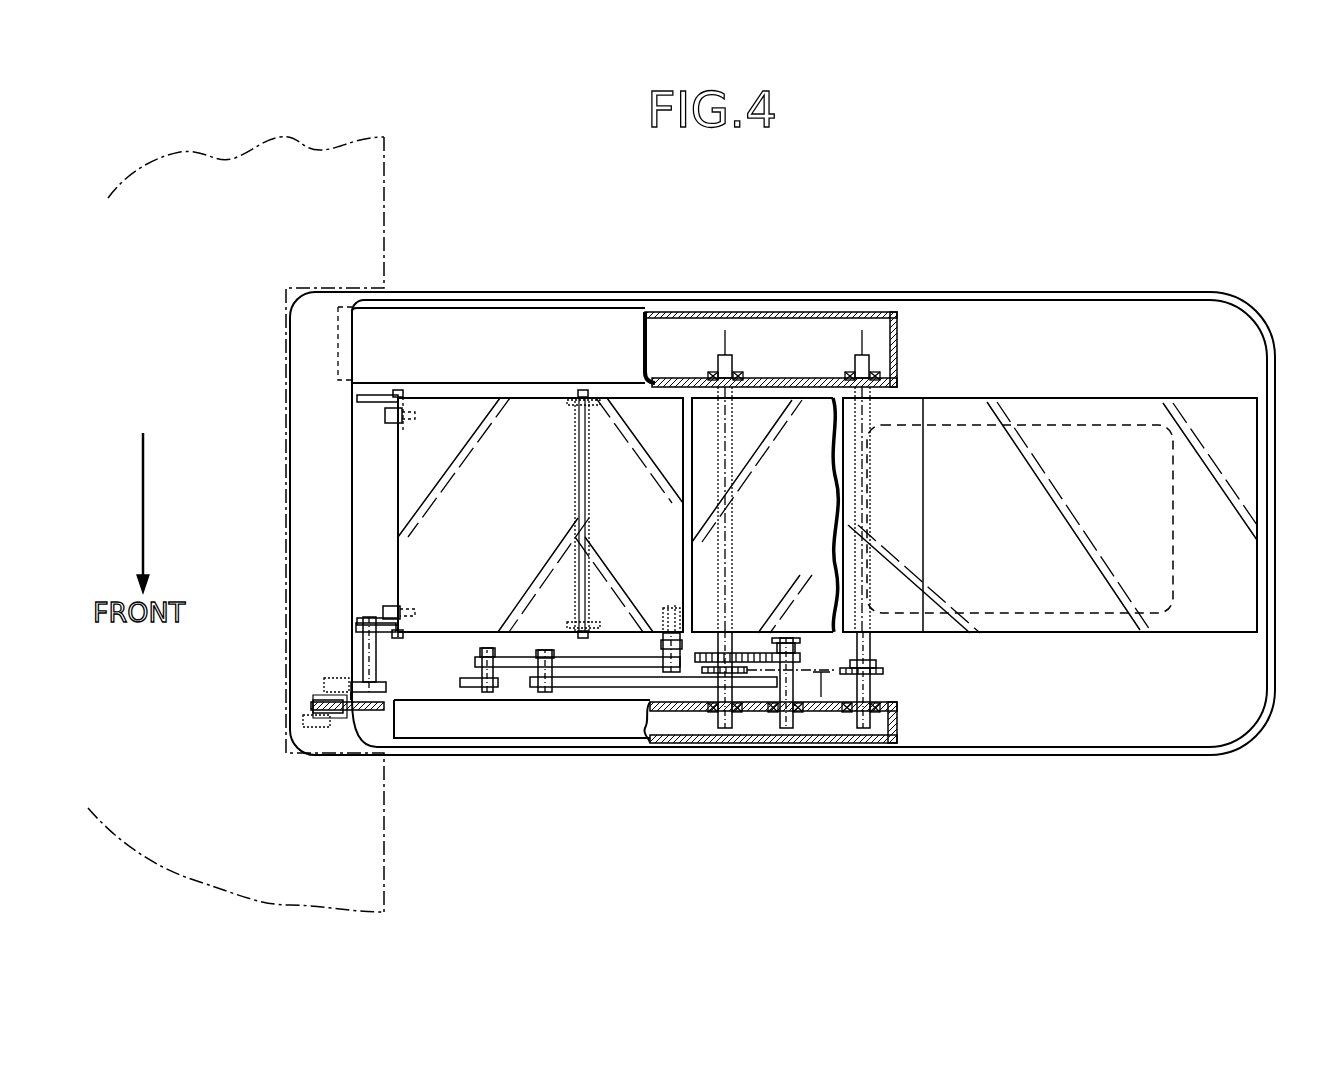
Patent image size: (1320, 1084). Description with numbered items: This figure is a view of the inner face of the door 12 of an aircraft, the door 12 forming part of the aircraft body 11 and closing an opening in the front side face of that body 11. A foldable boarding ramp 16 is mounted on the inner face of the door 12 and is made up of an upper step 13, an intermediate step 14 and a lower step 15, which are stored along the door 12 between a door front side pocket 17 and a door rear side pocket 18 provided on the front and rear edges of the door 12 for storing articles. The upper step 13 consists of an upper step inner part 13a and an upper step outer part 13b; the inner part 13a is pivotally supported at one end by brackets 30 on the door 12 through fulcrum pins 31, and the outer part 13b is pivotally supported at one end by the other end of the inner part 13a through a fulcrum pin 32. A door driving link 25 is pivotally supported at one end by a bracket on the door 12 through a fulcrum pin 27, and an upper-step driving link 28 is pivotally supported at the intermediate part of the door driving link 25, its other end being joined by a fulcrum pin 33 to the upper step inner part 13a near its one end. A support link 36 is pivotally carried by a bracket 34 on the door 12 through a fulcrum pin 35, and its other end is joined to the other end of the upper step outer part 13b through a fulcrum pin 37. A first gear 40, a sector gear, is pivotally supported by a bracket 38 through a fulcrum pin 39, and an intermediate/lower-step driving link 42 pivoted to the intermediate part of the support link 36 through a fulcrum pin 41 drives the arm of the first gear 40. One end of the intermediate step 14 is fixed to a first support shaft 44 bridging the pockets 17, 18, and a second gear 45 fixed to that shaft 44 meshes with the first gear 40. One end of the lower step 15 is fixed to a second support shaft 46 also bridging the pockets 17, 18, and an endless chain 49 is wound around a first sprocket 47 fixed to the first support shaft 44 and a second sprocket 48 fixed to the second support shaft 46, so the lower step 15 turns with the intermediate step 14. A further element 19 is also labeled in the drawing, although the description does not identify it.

The body 11 is at (384, 193).
The door 12 is at (1058, 297).
The upper step 13 is at (637, 256).
The upper step inner part 13a is at (507, 408).
The upper step outer part 13b is at (641, 408).
The intermediate step 14 is at (767, 415).
The lower step 15 is at (1120, 410).
The foldable boarding ramp 16 is at (940, 346).
The door front side pocket 17 is at (853, 743).
The door rear side pocket 18 is at (697, 312).
The opening 19 is at (1018, 430).
The door driving link 25 is at (368, 740).
The fulcrum pin 27 is at (320, 700).
The upper-step driving link 28 is at (383, 687).
The brackets 30 is at (387, 412).
The fulcrum pins 31 is at (395, 387).
The fulcrum pin 32 is at (582, 390).
The fulcrum pin 33 is at (363, 653).
The bracket 34 is at (472, 690).
The fulcrum pin 35 is at (487, 648).
The support link 36 is at (500, 667).
The fulcrum pin 37 is at (668, 650).
The bracket 38 is at (797, 638).
The fulcrum pin 39 is at (785, 730).
The first gear 40 is at (758, 648).
The fulcrum pin 41 is at (545, 650).
The intermediate/lower-step driving link 42 is at (573, 687).
The first support shaft 44 is at (723, 728).
The second gear 45 is at (712, 645).
The second support shaft 46 is at (867, 723).
The first sprocket 47 is at (698, 675).
The second sprocket 48 is at (883, 672).
The endless chain 49 is at (822, 712).